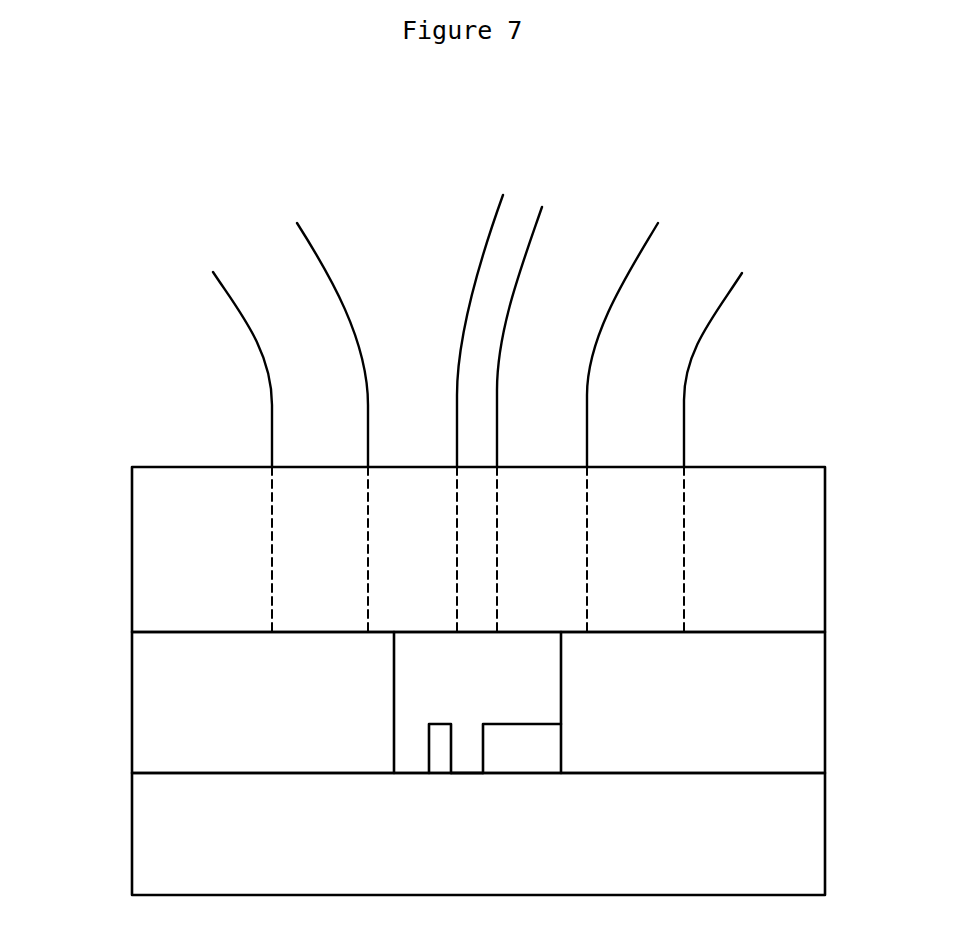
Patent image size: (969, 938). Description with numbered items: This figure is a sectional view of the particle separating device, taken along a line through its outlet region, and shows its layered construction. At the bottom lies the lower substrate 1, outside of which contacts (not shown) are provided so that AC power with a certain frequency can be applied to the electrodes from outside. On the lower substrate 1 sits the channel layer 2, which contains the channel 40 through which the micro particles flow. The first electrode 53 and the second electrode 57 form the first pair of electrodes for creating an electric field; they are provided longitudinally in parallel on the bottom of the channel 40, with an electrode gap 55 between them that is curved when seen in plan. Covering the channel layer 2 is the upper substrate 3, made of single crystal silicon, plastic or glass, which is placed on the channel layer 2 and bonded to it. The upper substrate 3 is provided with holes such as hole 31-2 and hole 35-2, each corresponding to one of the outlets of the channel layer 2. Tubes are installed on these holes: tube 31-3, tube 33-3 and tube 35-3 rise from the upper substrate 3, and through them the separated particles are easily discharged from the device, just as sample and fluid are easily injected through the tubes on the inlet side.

The lower substrate 1 is at (172, 836).
The channel layer 2 is at (172, 709).
The upper substrate 3 is at (172, 534).
The channel 40 is at (500, 680).
The first electrode 53 is at (440, 749).
The electrode gap 55 is at (467, 747).
The second electrode 57 is at (528, 750).
The hole 31-2 is at (297, 535).
The tube 31-3 is at (272, 273).
The hole 35-2 is at (473, 532).
The tube 35-3 is at (515, 220).
The tube 33-3 is at (690, 258).